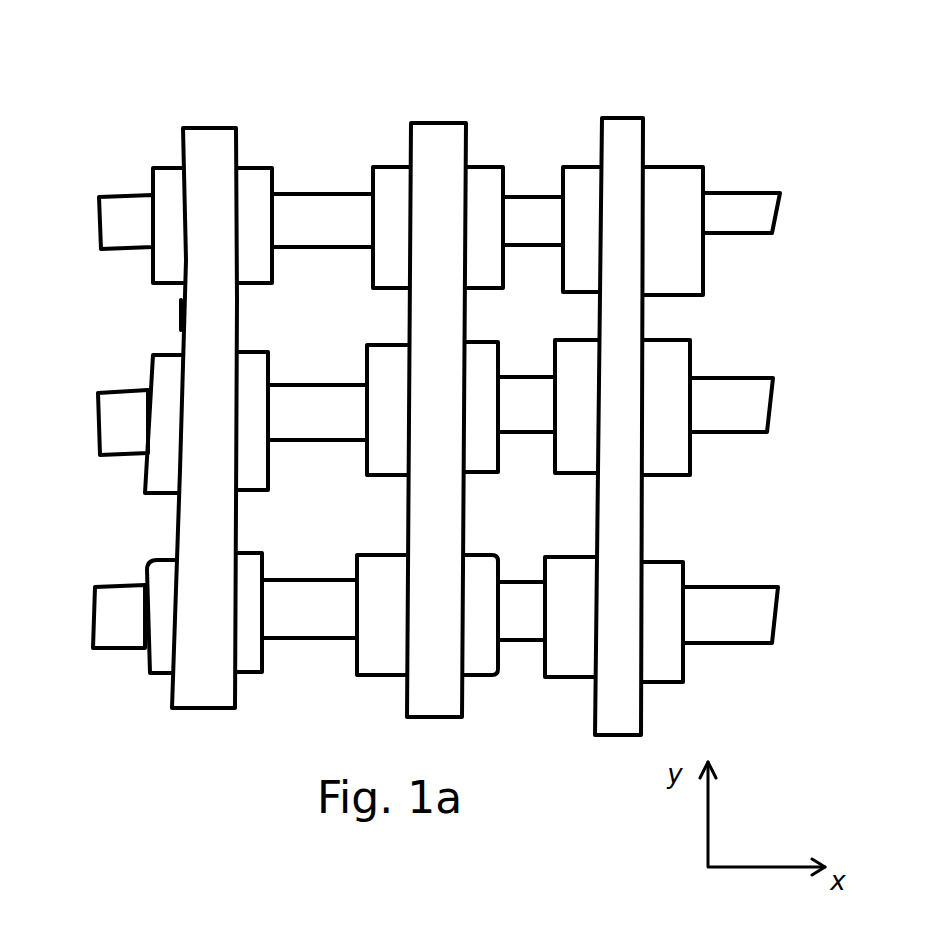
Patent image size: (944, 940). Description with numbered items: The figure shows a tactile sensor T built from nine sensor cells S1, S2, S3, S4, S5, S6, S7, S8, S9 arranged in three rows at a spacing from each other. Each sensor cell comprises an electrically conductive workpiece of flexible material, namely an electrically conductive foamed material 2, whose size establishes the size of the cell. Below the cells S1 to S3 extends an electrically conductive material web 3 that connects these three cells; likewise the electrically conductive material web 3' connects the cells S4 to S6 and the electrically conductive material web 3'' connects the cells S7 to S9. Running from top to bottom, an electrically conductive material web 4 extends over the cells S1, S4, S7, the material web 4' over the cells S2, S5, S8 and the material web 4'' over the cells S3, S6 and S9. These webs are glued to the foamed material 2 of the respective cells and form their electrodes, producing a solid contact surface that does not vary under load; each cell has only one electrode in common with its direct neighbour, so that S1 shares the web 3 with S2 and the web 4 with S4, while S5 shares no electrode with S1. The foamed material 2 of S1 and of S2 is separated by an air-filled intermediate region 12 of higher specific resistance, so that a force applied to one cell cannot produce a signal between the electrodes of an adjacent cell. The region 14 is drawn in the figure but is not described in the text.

The tactile sensor T is at (730, 120).
The electrically conductive foamed material 2 is at (148, 272).
The electrically conductive material web 3 is at (87, 207).
The electrically conductive material web 3' is at (88, 413).
The electrically conductive material web 3'' is at (82, 599).
The electrically conductive material web 4 is at (212, 376).
The electrically conductive material web 4' is at (447, 372).
The electrically conductive material web 4'' is at (644, 378).
The intermediate region 12 is at (315, 185).
The gap between electrode and strip 14 is at (182, 312).
The sensor cell S1 is at (252, 168).
The sensor cell S2 is at (487, 163).
The sensor cell S3 is at (710, 167).
The sensor cell S4 is at (253, 352).
The sensor cell S5 is at (492, 338).
The sensor cell S6 is at (693, 340).
The sensor cell S7 is at (250, 552).
The sensor cell S8 is at (475, 548).
The sensor cell S9 is at (678, 558).